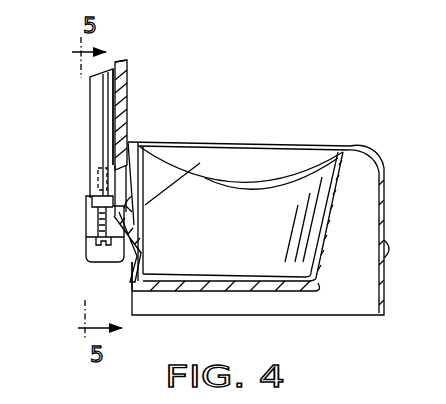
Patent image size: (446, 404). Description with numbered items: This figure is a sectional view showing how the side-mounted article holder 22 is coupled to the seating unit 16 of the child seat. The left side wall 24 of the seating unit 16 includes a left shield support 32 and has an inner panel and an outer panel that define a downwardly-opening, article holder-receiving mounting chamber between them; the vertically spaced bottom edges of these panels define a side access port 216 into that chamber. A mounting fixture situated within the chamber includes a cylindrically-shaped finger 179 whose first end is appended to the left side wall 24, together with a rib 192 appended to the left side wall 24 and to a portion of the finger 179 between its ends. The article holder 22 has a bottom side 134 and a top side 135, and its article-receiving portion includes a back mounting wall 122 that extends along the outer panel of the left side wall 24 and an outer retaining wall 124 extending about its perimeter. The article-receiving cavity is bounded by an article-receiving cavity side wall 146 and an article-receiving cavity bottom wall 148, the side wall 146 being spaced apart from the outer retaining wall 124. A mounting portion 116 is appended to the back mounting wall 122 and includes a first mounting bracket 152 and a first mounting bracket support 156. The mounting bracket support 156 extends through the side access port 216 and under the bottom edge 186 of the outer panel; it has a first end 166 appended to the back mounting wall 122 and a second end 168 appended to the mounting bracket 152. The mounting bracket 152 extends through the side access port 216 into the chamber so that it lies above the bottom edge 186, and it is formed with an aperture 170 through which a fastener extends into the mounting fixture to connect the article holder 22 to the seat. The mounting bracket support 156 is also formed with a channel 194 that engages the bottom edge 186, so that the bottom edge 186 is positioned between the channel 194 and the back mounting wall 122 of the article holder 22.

The seating unit 16 is at (141, 89).
The side-mounted article holder 22 is at (357, 145).
The left side wall 24 is at (136, 105).
The left shield support 32 is at (131, 63).
The mounting portion 116 is at (78, 153).
The back mounting wall 122 is at (200, 147).
The outer retaining wall 124 is at (378, 244).
The bottom side 134 is at (260, 315).
The top side 135 is at (333, 147).
The article-receiving cavity side wall 146 is at (357, 235).
The article-receiving cavity bottom wall 148 is at (230, 279).
The first mounting bracket 152 is at (88, 210).
The first mounting bracket support 156 is at (121, 256).
The first end 166 is at (126, 206).
The second end 168 is at (195, 169).
The aperture 170 is at (137, 230).
The cylindrically-shaped finger 179 is at (89, 110).
The bottom edge 186 is at (137, 247).
The rib 192 is at (127, 123).
The channel 194 is at (124, 208).
The side access port 216 is at (124, 302).